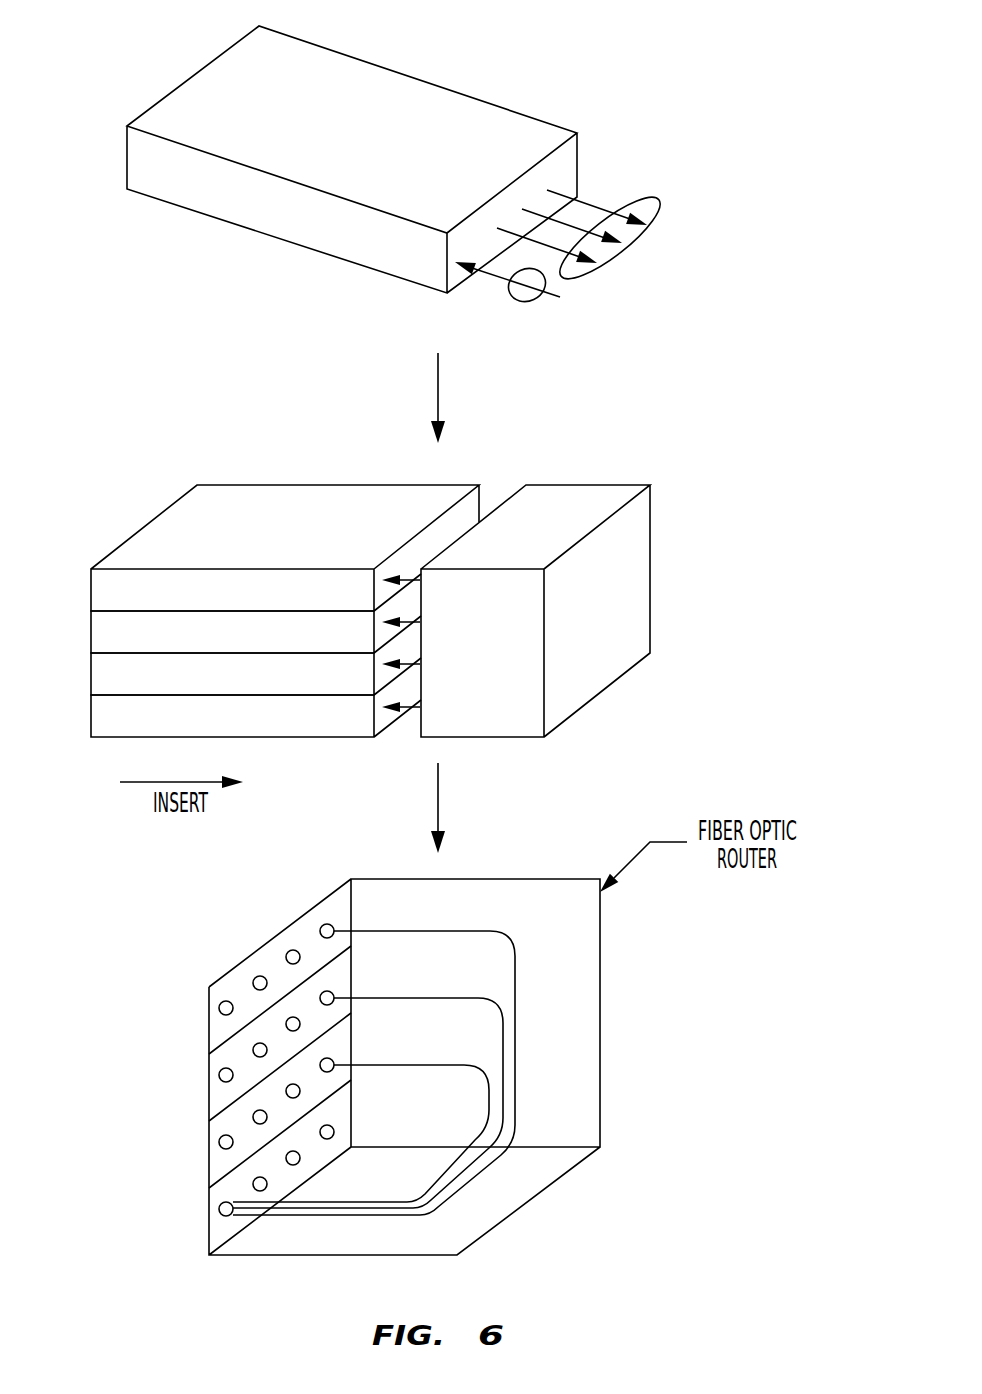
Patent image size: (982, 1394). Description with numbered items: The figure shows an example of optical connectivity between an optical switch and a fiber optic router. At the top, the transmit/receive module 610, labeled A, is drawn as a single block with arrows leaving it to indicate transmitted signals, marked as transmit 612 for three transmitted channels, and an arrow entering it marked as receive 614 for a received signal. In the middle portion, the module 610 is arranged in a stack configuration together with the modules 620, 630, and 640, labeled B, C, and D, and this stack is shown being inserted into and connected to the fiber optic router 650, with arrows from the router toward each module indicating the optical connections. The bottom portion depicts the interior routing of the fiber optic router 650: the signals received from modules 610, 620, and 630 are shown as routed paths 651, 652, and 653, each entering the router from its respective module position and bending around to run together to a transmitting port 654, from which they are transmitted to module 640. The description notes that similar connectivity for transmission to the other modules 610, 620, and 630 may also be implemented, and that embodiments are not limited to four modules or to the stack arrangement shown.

The transmit/receive (T/R) module 610 is at (221, 53).
The transmit optical signals 612 is at (653, 200).
The receive optical signal 614 is at (522, 303).
The module 620 is at (90, 629).
The module 630 is at (90, 671).
The module 640 is at (90, 716).
The fiber optic router 650 is at (652, 576).
The received signal from module 610 651 is at (516, 978).
The received signal from module 620 652 is at (504, 1048).
The received signal from module 630 653 is at (490, 1107).
The transmitting port 654 is at (218, 1208).